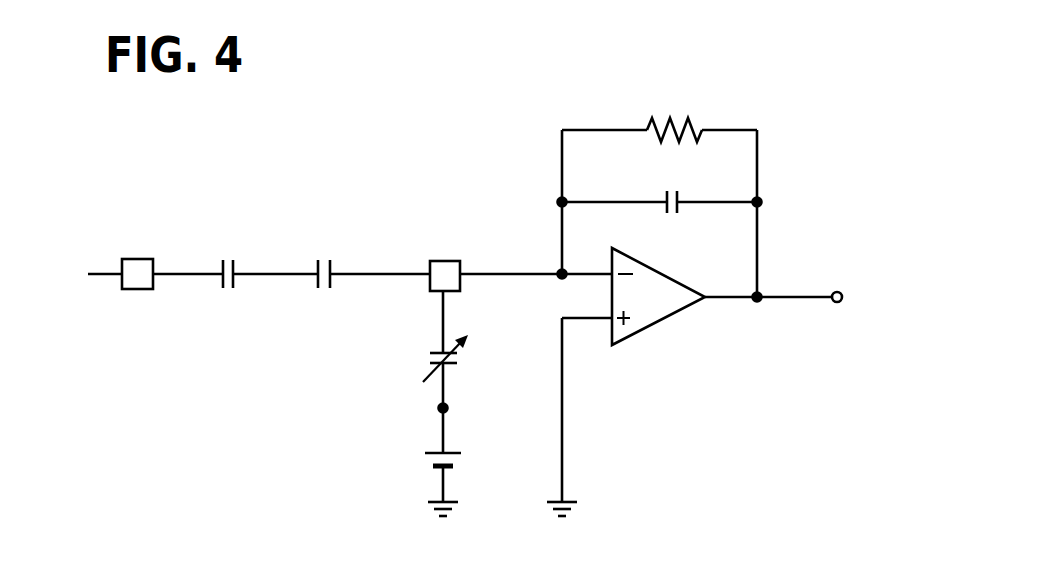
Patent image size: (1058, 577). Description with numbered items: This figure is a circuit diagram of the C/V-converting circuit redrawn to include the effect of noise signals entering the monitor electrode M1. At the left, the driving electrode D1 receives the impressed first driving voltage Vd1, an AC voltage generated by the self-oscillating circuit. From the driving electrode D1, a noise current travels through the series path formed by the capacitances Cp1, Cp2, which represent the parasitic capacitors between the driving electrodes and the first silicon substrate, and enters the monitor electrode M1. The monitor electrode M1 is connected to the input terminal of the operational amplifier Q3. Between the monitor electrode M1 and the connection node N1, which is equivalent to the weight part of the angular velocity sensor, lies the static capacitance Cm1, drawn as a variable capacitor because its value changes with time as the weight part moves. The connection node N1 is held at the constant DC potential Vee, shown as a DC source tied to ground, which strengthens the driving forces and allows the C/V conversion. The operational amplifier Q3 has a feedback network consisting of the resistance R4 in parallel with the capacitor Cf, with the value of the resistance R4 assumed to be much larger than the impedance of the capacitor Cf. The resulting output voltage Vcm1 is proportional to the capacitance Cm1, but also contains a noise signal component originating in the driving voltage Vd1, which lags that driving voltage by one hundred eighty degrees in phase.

The first driving voltage Vd1 is at (77, 275).
The driving electrode D1 is at (172, 258).
The capacitor Cp1 is at (264, 258).
The capacitor Cp2 is at (365, 258).
The monitor electrode M1 is at (517, 290).
The static capacitance Cm1 is at (417, 371).
The connection node N1 is at (447, 407).
The DC potential Vee is at (413, 480).
The operational amplifier Q3 is at (626, 323).
The resistance R4 is at (659, 192).
The capacitor Cf is at (660, 184).
The output voltage Vcm1 is at (815, 300).